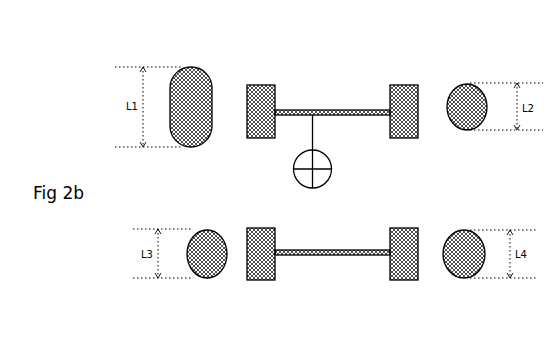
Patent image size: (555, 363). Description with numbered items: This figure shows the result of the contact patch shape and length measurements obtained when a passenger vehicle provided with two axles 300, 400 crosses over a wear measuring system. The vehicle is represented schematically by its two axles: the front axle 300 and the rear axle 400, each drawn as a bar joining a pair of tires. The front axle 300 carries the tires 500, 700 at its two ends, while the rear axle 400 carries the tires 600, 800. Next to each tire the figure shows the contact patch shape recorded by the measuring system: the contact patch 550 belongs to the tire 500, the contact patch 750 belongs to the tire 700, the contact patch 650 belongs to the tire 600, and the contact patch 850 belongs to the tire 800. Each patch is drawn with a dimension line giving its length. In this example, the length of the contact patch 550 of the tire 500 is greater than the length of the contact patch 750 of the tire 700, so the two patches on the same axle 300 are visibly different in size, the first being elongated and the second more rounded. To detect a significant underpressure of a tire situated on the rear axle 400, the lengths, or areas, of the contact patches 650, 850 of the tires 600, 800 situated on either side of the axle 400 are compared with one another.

The front axle 300 is at (294, 110).
The rear axle 400 is at (358, 257).
The tire 500 is at (256, 84).
The contact patch 550 is at (190, 147).
The tire 600 is at (257, 282).
The contact patch 650 is at (198, 280).
The tire 700 is at (403, 84).
The contact patch 750 is at (468, 82).
The tire 800 is at (418, 277).
The contact patch 850 is at (467, 232).